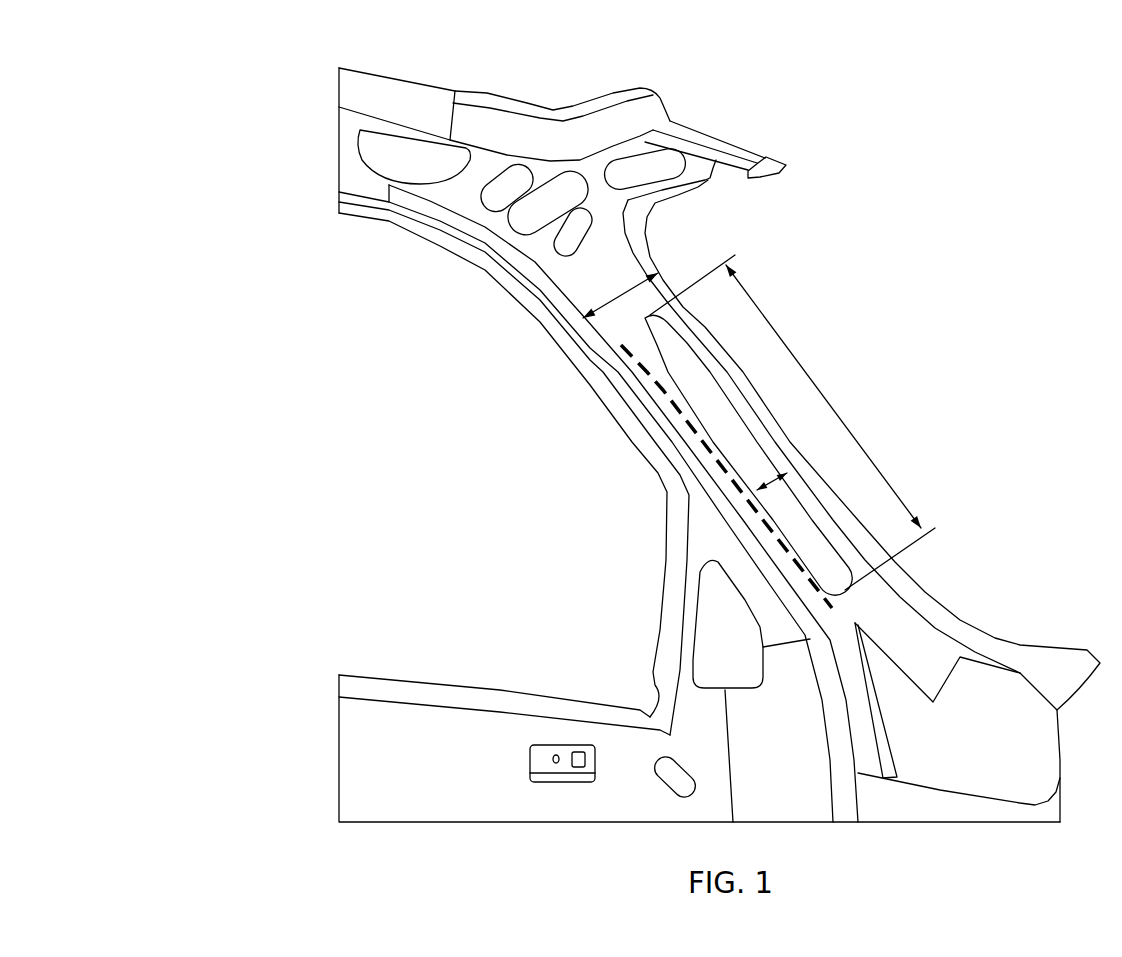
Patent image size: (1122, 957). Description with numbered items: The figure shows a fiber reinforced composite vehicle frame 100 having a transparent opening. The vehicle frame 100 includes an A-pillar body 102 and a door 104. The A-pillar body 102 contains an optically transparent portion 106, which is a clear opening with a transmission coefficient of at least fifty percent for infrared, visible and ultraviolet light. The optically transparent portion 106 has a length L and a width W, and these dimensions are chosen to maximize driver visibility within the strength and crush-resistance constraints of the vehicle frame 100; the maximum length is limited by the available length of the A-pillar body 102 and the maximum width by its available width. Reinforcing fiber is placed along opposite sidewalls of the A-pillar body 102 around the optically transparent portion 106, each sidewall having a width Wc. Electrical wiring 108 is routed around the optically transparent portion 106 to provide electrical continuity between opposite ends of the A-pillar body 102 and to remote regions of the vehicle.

The vehicle frame 100 is at (238, 52).
The A-pillar body 102 is at (625, 319).
The door 104 is at (441, 769).
The optically transparent portion 106 is at (793, 523).
The electrical wiring 108 is at (663, 391).